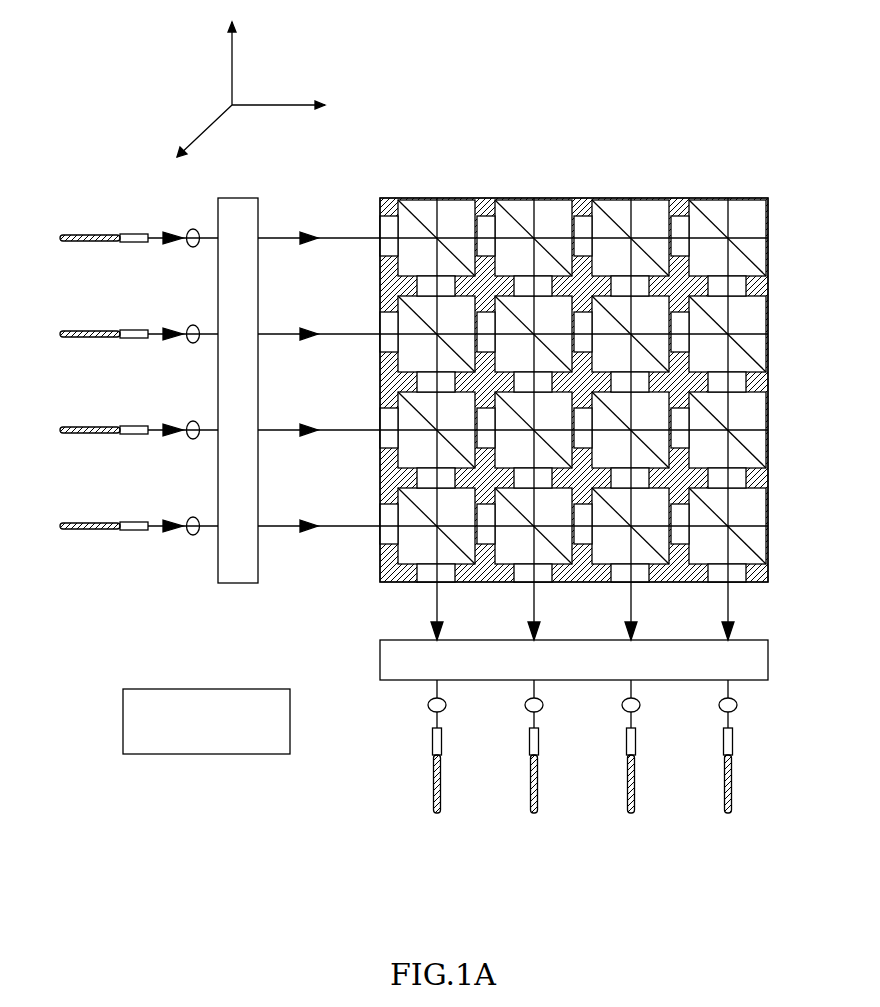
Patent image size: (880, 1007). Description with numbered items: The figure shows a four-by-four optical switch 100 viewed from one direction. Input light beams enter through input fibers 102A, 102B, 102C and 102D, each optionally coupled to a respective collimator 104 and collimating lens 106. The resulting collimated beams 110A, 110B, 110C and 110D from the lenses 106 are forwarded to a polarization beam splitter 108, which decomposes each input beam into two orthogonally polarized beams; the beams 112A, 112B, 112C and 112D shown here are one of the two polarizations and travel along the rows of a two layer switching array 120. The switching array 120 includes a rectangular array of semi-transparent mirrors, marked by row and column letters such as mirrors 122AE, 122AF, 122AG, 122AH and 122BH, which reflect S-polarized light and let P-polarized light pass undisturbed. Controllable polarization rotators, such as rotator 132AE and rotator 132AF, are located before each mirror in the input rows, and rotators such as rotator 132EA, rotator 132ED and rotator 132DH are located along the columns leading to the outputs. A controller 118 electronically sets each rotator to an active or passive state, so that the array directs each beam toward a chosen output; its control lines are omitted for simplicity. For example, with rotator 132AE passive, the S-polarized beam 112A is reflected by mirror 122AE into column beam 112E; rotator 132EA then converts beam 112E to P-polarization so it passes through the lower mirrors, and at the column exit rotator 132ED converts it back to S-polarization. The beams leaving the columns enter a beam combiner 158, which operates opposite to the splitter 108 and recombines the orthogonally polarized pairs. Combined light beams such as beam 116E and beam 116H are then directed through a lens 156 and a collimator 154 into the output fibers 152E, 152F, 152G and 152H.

The optical switch 100 is at (728, 52).
The input fiber 102A is at (95, 232).
The input fiber 102B is at (95, 328).
The input fiber 102C is at (95, 424).
The input fiber 102D is at (95, 520).
The collimator 104 is at (120, 233).
The collimating lens 106 is at (193, 247).
The polarization beam splitter 108 is at (238, 583).
The collimated beam 110A is at (200, 230).
The collimated beam 110B is at (200, 326).
The collimated beam 110C is at (200, 422).
The collimated beam 110D is at (200, 518).
The S-polarized beam 112A is at (337, 240).
The beam 112B is at (337, 336).
The beam 112C is at (337, 432).
The beam 112D is at (337, 528).
The deflected beam 112E is at (440, 607).
The combined light beam 116E is at (437, 690).
The combined light beam 116H is at (729, 690).
The controller 118 is at (222, 689).
The two layer switching array 120 is at (597, 343).
The semi-transparent mirror 122AE is at (421, 220).
The semi-transparent mirror 122AF is at (519, 217).
The semi-transparent mirror 122AG is at (617, 217).
The semi-transparent mirror 122AH is at (735, 233).
The semi-transparent mirror 122BH is at (735, 329).
The polarization rotator 132AE is at (383, 228).
The polarization rotator 132AF is at (470, 226).
The polarization rotator 132EA is at (447, 283).
The polarization rotator 132DH is at (683, 518).
The polarization rotator 132ED is at (423, 578).
The output fiber 152E is at (438, 793).
The output fiber 152F is at (535, 793).
The output fiber 152G is at (632, 793).
The output fiber 152H is at (729, 793).
The collimator 154 is at (733, 740).
The lens 156 is at (738, 707).
The beam combiner 158 is at (769, 660).